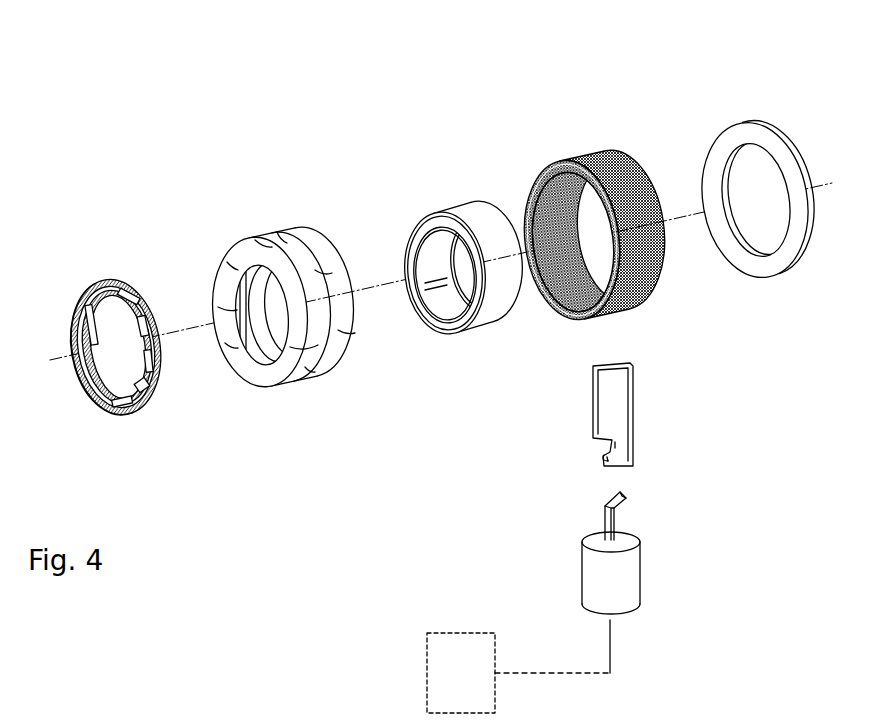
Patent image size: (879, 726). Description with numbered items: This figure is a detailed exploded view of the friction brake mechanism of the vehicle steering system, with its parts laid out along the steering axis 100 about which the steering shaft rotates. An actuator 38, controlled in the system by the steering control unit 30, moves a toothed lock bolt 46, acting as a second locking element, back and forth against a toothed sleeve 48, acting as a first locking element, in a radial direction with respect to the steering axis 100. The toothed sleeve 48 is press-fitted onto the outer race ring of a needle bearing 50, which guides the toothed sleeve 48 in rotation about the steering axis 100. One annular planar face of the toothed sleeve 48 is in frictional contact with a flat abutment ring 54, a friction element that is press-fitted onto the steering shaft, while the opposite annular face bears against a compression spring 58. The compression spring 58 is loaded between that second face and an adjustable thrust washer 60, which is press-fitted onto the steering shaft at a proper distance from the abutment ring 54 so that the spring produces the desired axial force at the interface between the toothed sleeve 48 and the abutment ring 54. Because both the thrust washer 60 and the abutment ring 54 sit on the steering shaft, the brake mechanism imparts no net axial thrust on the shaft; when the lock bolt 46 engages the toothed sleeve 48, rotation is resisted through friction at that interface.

The steering control unit 30 is at (452, 645).
The actuator 38 is at (630, 577).
The toothed lock bolt 46 is at (638, 398).
The toothed sleeve 48 is at (613, 152).
The needle bearing 50 is at (484, 333).
The flat abutment ring 54 is at (748, 122).
The compression spring 58 is at (312, 252).
The adjustable thrust washer 60 is at (127, 418).
The steering axis 100 is at (692, 217).